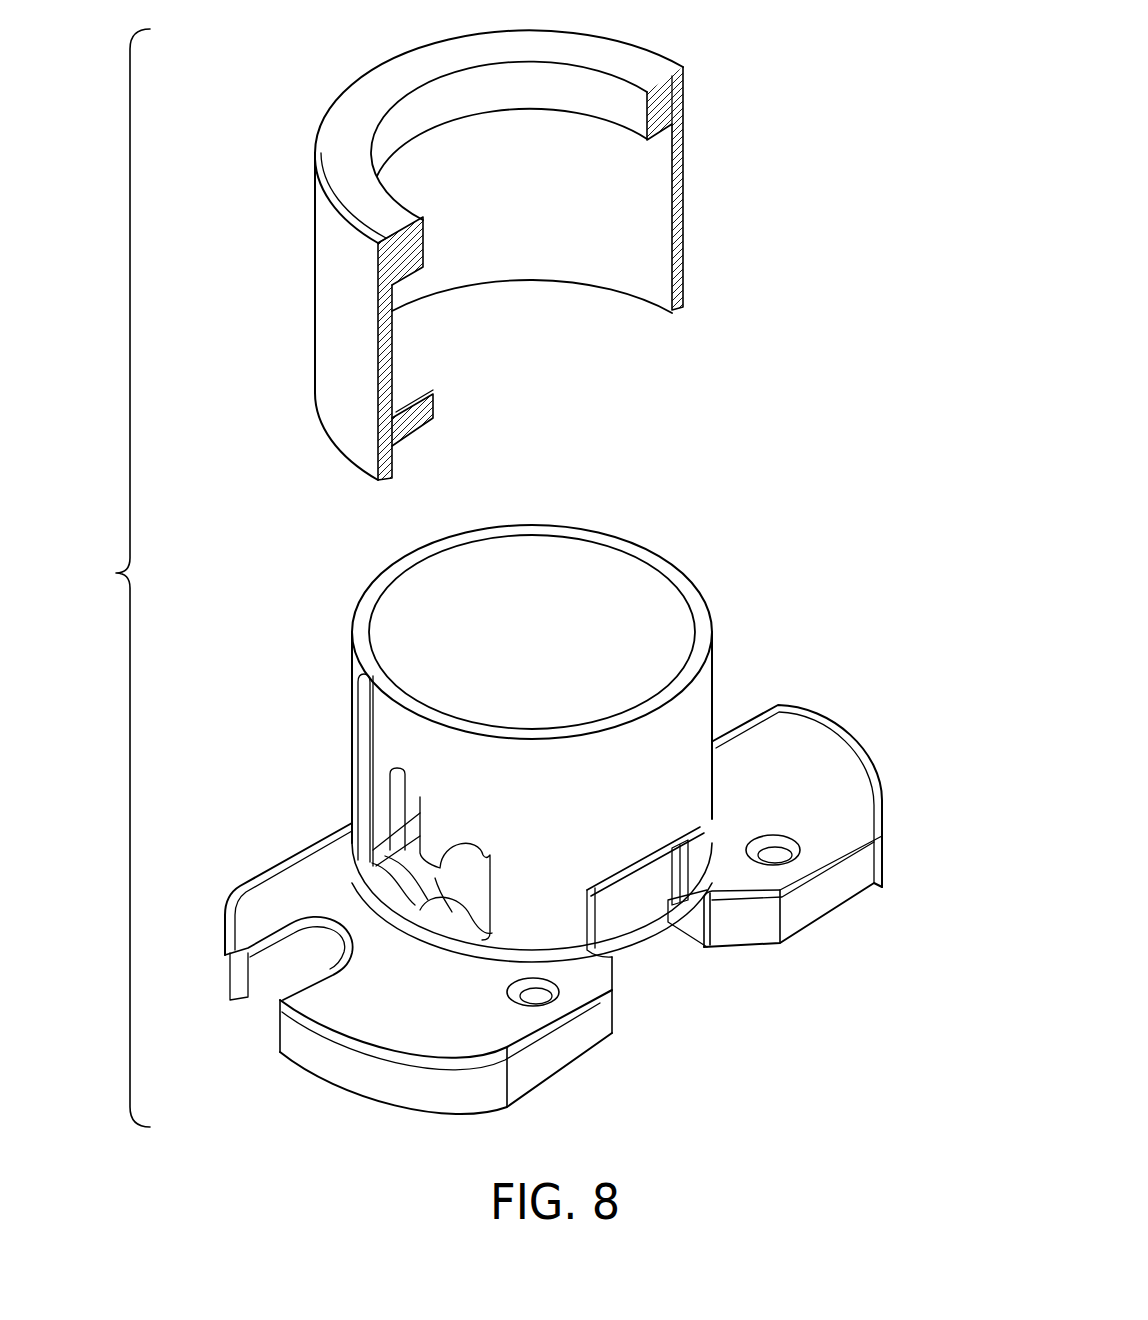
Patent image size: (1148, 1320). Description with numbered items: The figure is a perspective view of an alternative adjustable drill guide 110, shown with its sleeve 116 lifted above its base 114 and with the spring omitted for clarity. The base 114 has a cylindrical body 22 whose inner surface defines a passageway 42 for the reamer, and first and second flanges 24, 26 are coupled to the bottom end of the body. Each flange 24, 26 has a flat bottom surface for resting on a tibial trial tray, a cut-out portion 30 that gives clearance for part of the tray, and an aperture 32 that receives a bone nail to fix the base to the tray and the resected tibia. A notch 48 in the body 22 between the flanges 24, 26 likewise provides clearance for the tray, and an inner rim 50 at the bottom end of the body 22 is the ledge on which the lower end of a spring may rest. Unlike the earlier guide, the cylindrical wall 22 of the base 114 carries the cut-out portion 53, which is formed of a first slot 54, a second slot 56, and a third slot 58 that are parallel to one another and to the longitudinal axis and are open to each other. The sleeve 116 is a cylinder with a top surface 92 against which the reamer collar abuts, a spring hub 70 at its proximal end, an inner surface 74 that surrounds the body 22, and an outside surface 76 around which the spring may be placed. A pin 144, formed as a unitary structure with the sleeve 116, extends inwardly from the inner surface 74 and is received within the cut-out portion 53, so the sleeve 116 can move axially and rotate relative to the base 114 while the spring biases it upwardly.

The guide 110 is at (106, 578).
The sleeve 116 is at (536, 240).
The top surface 92 is at (632, 56).
The spring hub 70 is at (425, 240).
The inner surface 74 is at (662, 243).
The outside surface 76 is at (322, 350).
The pin 144 is at (432, 421).
The base 114 is at (546, 796).
The cylindrical body 22 is at (710, 708).
The passageway 42 is at (572, 595).
The first slot 54 is at (360, 727).
The cut-out portion 53 is at (366, 762).
The second slot 56 is at (412, 790).
The third slot 58 is at (480, 858).
The inner rim 50 is at (672, 885).
The notch 48 is at (628, 903).
The first flange 24 is at (385, 1032).
The second flange 26 is at (868, 807).
The cut-out portion 30 is at (280, 967).
The aperture 32 is at (515, 993).